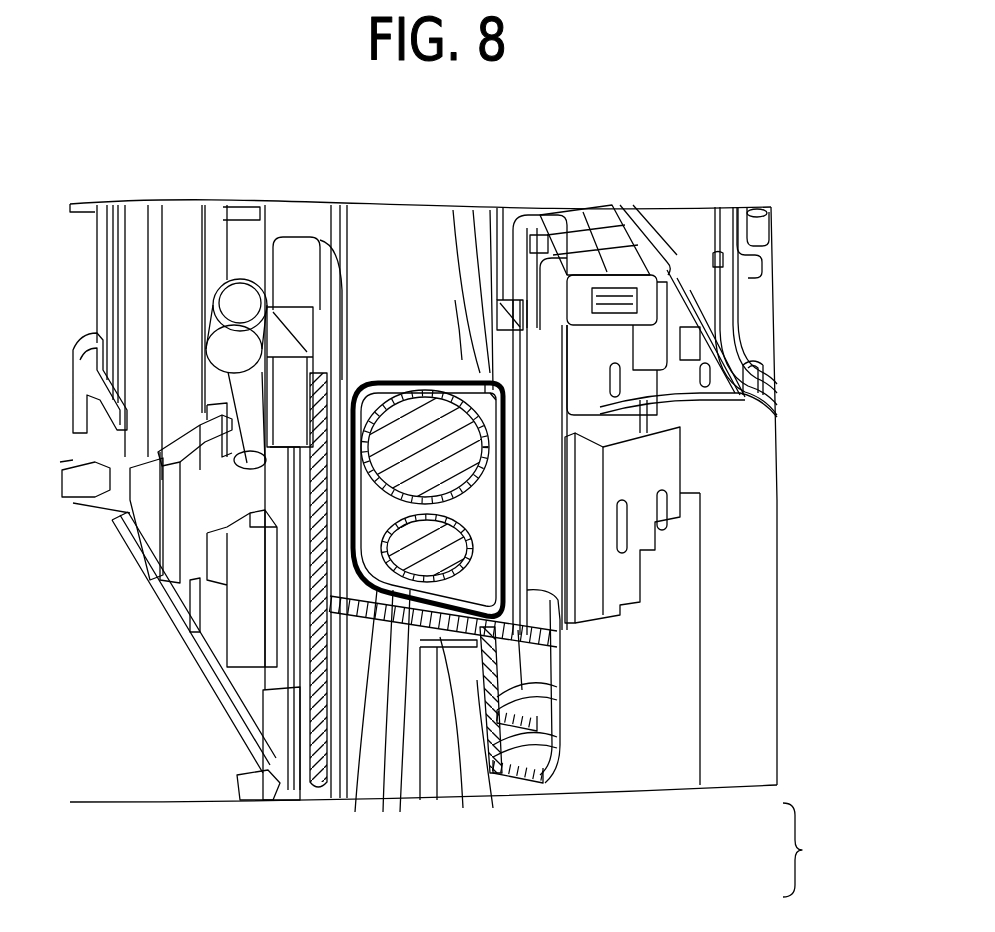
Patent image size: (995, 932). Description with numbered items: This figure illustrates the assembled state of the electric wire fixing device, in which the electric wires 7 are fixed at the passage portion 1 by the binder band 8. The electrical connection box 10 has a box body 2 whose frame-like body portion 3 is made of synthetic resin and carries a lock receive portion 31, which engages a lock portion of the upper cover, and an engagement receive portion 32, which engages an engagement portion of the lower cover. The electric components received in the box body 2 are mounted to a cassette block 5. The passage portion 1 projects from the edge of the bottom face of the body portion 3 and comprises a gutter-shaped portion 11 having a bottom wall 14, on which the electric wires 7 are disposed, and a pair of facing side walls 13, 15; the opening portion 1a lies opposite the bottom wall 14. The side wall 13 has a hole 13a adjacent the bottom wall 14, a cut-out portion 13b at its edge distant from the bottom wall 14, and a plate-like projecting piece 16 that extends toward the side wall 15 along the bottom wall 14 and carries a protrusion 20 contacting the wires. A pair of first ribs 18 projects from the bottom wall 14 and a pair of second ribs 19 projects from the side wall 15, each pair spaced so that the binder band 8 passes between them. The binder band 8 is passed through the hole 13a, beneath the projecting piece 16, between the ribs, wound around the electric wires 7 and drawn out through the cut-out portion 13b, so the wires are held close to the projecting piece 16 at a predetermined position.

The passage portion 1 is at (517, 558).
The opening portion 1a is at (376, 375).
The box body 2 is at (785, 232).
The body portion 3 is at (730, 642).
The cassette block 5 is at (633, 340).
The electric wires 7 is at (449, 550).
The binder band 8 is at (478, 640).
The electrical connection box 10 is at (455, 457).
The gutter-shaped portion 11 is at (795, 850).
The side wall 13 is at (500, 517).
The hole 13a is at (520, 622).
The cut-out portion 13b is at (600, 393).
The bottom wall 14 is at (458, 780).
The side wall 15 is at (305, 525).
The projecting piece 16 is at (408, 778).
The first ribs 18 is at (370, 762).
The second ribs 19 is at (330, 473).
The protrusion 20 is at (386, 795).
The lock receive portion 31 is at (77, 472).
The engagement receive portion 32 is at (265, 237).